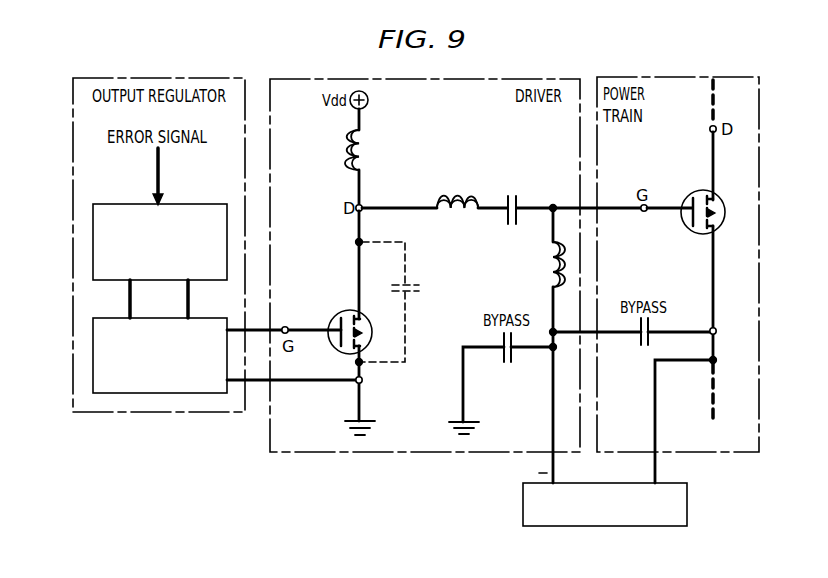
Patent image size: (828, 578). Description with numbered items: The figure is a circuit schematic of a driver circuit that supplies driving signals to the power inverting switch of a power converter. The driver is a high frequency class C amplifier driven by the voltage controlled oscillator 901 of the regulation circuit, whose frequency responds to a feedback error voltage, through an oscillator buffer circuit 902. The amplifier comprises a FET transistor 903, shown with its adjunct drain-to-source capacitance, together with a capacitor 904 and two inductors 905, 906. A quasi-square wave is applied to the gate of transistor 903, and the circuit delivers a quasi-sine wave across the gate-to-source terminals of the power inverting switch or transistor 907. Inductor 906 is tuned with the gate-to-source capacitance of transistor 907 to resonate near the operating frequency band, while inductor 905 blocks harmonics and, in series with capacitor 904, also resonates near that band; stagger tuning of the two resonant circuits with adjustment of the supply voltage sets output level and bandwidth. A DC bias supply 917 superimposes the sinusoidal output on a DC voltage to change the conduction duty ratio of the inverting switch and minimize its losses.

The voltage controlled oscillator 901 is at (121, 204).
The oscillator buffer circuit 902 is at (121, 318).
The FET transistor 903 is at (335, 308).
The capacitor 904 is at (511, 201).
The inductor 905 is at (457, 191).
The inductor 906 is at (538, 247).
The power inverting switch 907 is at (747, 194).
The DC bias supply 917 is at (660, 527).